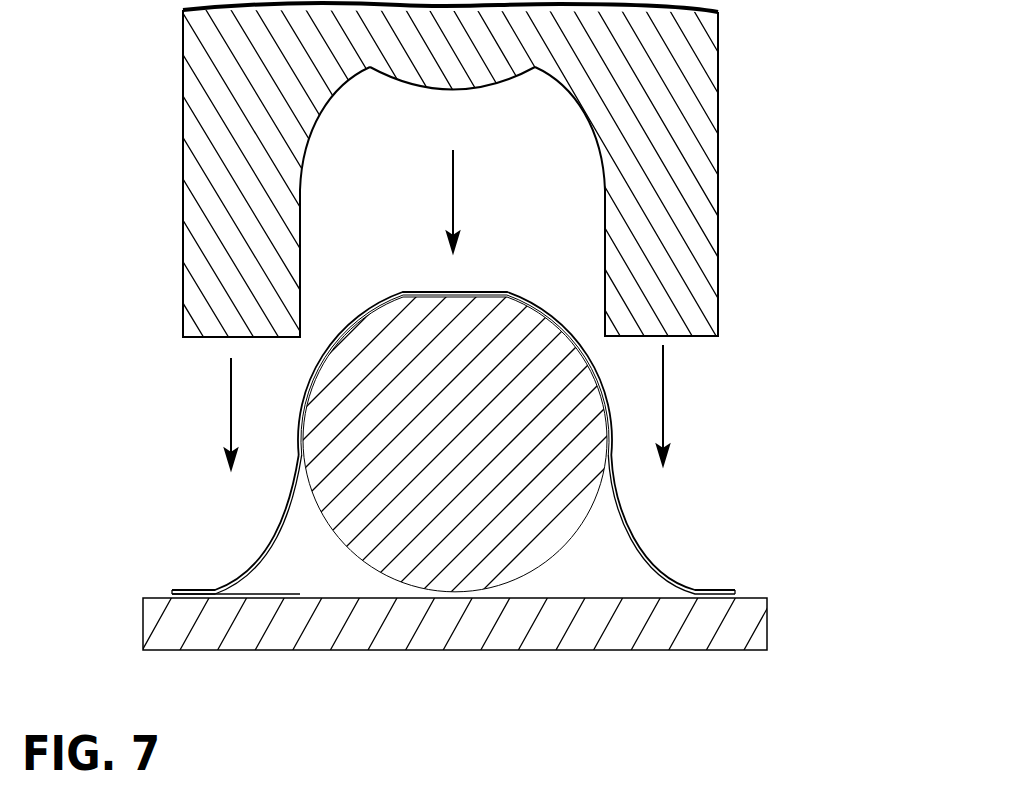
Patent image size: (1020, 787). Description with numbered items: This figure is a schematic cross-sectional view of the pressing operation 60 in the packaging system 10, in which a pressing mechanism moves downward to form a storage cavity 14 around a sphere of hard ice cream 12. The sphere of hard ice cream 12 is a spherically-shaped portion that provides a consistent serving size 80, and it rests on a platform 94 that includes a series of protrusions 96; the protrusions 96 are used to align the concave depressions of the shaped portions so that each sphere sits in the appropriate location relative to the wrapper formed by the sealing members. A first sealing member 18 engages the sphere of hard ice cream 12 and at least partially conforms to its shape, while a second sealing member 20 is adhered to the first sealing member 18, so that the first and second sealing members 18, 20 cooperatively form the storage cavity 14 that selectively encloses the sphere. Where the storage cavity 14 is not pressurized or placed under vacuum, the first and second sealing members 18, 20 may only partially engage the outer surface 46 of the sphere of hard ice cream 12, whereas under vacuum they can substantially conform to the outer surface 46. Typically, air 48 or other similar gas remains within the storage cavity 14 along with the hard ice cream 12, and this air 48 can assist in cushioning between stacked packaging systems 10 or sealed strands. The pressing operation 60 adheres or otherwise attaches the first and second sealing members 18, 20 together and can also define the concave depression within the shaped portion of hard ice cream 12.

The packaging system 10 is at (423, 471).
The hard ice cream 12 is at (487, 562).
The storage cavity 14 is at (512, 374).
The first sealing member 18 is at (242, 524).
The second sealing member 20 is at (612, 592).
The outer surface 46 is at (181, 547).
The air 48 is at (329, 566).
The pressing operation 60 is at (458, 175).
The consistent serving size 80 is at (429, 299).
The platform 94 is at (775, 599).
The protrusion 96 is at (460, 90).